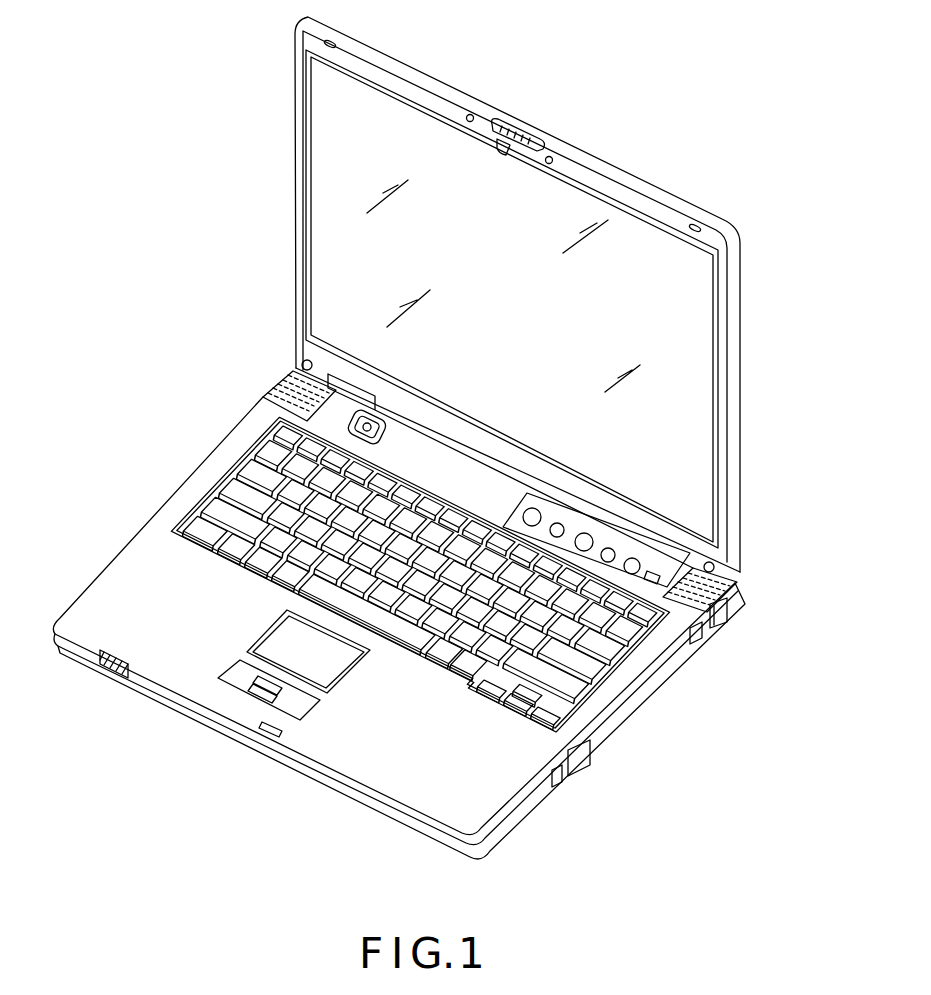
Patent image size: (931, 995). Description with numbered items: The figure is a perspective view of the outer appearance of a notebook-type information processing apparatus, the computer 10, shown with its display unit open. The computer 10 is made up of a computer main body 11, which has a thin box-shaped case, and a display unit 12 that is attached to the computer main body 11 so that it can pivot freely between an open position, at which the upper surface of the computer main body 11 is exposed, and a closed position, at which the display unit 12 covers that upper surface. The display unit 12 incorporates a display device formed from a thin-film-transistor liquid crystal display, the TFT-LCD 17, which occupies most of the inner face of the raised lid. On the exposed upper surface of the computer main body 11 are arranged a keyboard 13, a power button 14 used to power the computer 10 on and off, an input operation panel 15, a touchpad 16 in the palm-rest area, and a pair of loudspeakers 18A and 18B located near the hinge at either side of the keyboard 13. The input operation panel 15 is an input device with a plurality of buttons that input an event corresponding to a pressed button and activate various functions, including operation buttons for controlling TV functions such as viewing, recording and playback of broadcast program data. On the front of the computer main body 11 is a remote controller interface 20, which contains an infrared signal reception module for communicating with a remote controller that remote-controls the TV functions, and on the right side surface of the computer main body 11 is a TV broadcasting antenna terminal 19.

The computer 10 is at (748, 749).
The computer main body 11 is at (517, 823).
The display unit 12 is at (735, 438).
The keyboard 13 is at (553, 675).
The power button 14 is at (357, 420).
The input operation panel 15 is at (598, 541).
The touchpad 16 is at (278, 652).
The TFT-LCD 17 is at (692, 322).
The loudspeaker 18A is at (288, 378).
The loudspeaker 18B is at (722, 578).
The TV broadcasting antenna terminal 19 is at (727, 614).
The remote controller interface 20 is at (110, 677).